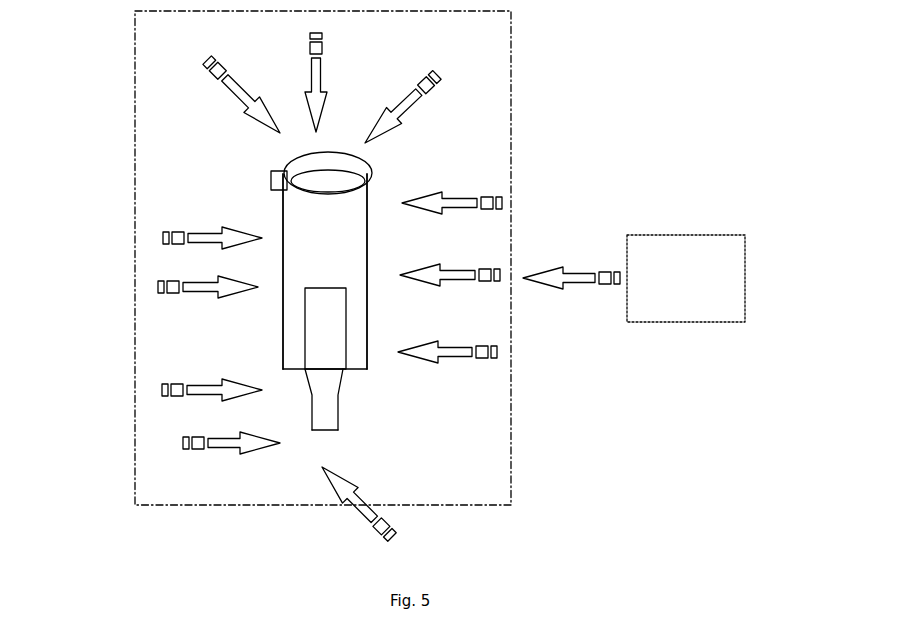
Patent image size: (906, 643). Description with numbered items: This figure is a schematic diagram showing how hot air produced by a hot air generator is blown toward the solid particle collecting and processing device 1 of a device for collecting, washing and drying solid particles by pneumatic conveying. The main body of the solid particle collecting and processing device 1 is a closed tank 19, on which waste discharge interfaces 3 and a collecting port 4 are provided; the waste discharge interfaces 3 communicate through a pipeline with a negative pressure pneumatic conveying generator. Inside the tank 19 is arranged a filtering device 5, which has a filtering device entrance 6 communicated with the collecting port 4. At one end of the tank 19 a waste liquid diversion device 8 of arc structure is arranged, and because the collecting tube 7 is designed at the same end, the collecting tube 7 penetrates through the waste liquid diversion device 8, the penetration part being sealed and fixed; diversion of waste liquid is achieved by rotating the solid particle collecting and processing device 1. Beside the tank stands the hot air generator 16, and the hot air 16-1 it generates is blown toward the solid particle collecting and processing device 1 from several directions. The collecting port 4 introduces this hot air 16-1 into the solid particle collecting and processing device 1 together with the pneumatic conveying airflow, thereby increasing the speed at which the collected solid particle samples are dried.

The solid particle collecting and processing device 1 is at (518, 65).
The waste discharge interfaces 3 is at (270, 175).
The tank 19 is at (283, 227).
The waste liquid diversion device 8 is at (368, 171).
The filtering device 5 is at (310, 307).
The filtering device entrance 6 is at (330, 365).
The collecting tube 7 is at (325, 400).
The collecting port 4 is at (322, 432).
The hot air generator 16 is at (678, 307).
The hot air 16-1 is at (562, 278).